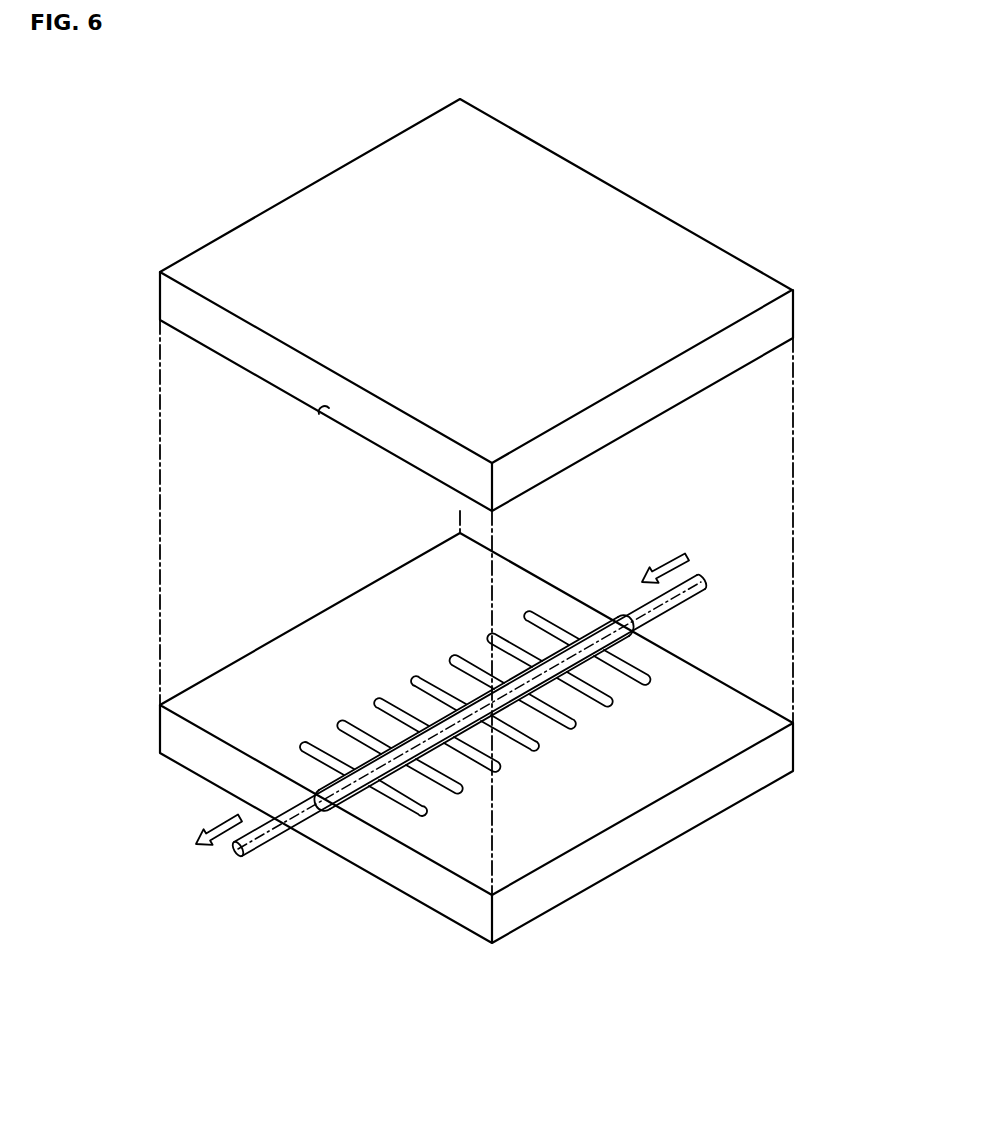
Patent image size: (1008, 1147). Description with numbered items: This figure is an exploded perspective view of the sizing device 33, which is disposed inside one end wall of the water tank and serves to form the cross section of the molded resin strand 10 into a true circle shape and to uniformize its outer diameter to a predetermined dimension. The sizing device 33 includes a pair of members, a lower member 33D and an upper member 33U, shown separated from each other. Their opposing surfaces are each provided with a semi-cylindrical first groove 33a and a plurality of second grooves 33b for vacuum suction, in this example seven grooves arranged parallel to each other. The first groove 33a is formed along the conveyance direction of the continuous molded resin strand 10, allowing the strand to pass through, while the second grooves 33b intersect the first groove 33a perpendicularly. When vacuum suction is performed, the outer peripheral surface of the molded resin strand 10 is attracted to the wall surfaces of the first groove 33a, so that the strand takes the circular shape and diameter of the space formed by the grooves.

The sizing device 33 is at (698, 174).
The upper member 33U is at (172, 300).
The lower member 33D is at (172, 741).
The first groove 33a is at (325, 416).
The second grooves 33b is at (550, 628).
The molded resin strand 10 is at (278, 840).